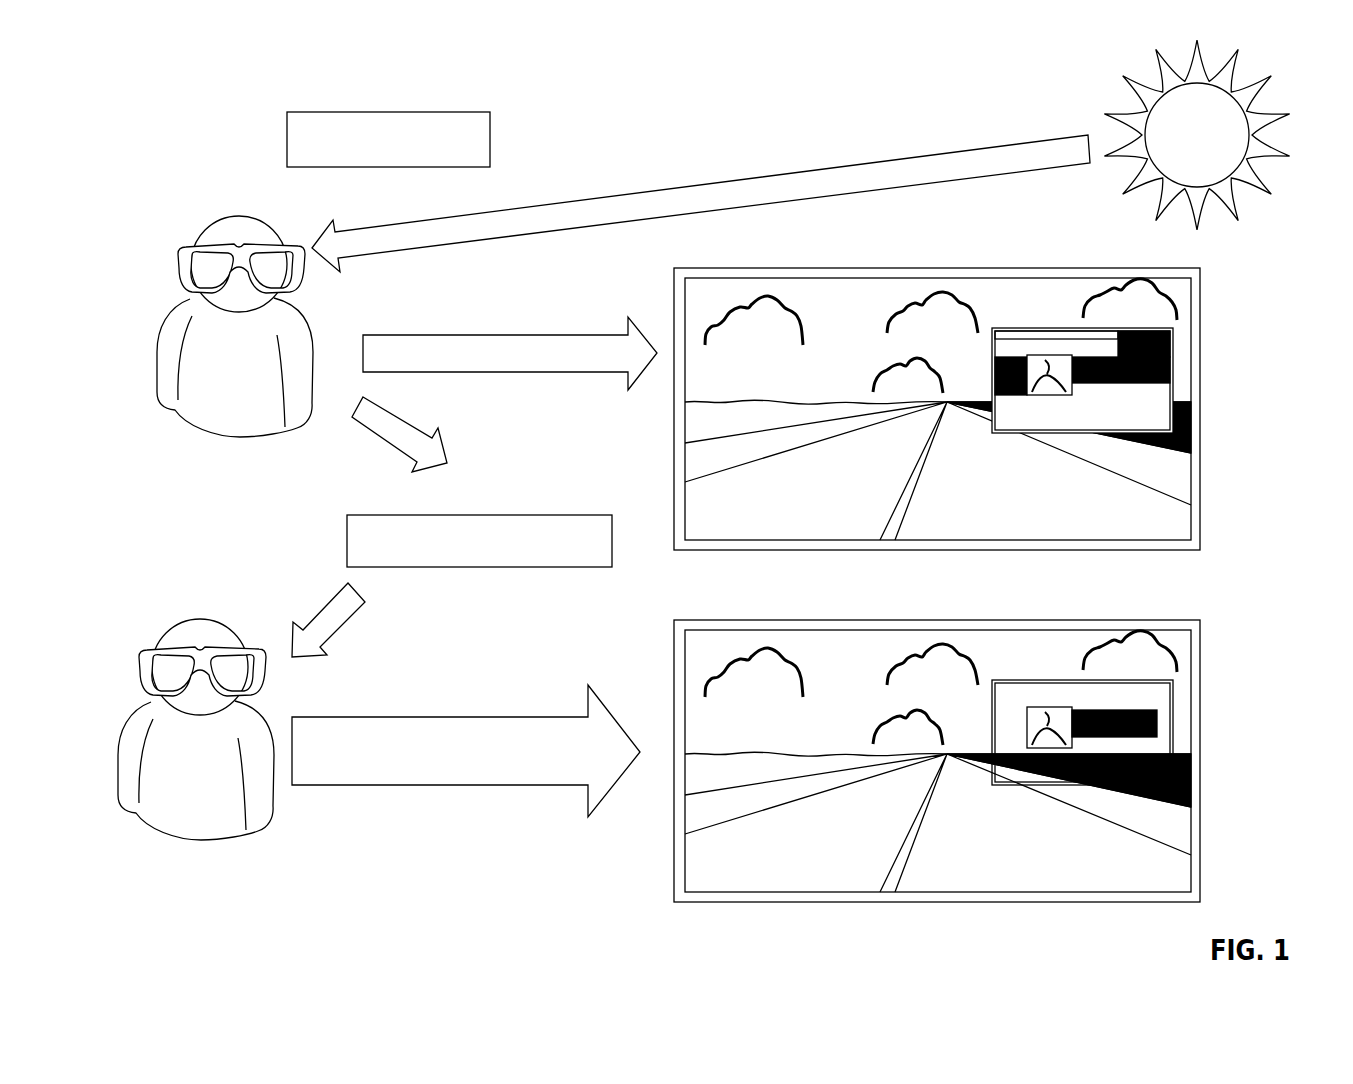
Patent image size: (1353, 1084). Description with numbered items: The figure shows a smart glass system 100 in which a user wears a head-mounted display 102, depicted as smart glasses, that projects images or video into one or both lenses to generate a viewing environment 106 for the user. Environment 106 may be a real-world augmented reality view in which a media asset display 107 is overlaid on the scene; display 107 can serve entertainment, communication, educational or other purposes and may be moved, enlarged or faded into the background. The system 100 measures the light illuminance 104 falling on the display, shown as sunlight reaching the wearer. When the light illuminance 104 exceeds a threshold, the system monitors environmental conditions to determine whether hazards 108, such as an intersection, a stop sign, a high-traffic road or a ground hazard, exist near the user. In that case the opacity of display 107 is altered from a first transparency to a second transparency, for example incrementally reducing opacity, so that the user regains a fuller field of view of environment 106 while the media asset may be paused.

The smart glass system 100 is at (205, 95).
The head-mounted display 102 is at (188, 245).
The light illuminance 104 is at (1122, 108).
The viewing environment 106 is at (742, 268).
The display 107 is at (1057, 328).
The hazards 108 is at (413, 514).